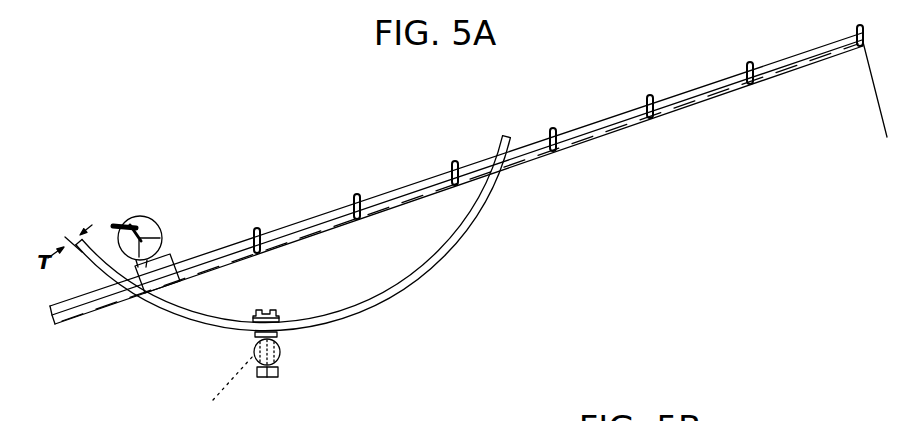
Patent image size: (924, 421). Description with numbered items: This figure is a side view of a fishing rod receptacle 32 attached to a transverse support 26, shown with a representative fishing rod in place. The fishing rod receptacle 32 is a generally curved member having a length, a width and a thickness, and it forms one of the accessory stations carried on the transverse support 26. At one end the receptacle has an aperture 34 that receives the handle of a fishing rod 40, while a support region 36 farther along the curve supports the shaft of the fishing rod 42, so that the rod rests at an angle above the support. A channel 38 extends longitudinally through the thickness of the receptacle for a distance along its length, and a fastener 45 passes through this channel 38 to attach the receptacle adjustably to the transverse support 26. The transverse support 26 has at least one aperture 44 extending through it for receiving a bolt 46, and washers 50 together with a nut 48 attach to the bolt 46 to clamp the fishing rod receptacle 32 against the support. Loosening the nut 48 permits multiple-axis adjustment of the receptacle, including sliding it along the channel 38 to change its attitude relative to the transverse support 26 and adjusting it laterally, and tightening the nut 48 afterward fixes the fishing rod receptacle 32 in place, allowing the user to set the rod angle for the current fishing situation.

The transverse support 26 is at (282, 348).
The fishing rod receptacle 32 is at (299, 238).
The aperture 34 is at (120, 288).
The support region 36 is at (502, 147).
The channel 38 is at (181, 327).
The handle of a fishing rod 40 is at (62, 318).
The shaft of a fishing rod 42 is at (604, 134).
The aperture 44 is at (229, 388).
The fastener 45 is at (303, 375).
The bolt 46 is at (286, 375).
The nut 48 is at (272, 310).
The washers 50 is at (300, 327).